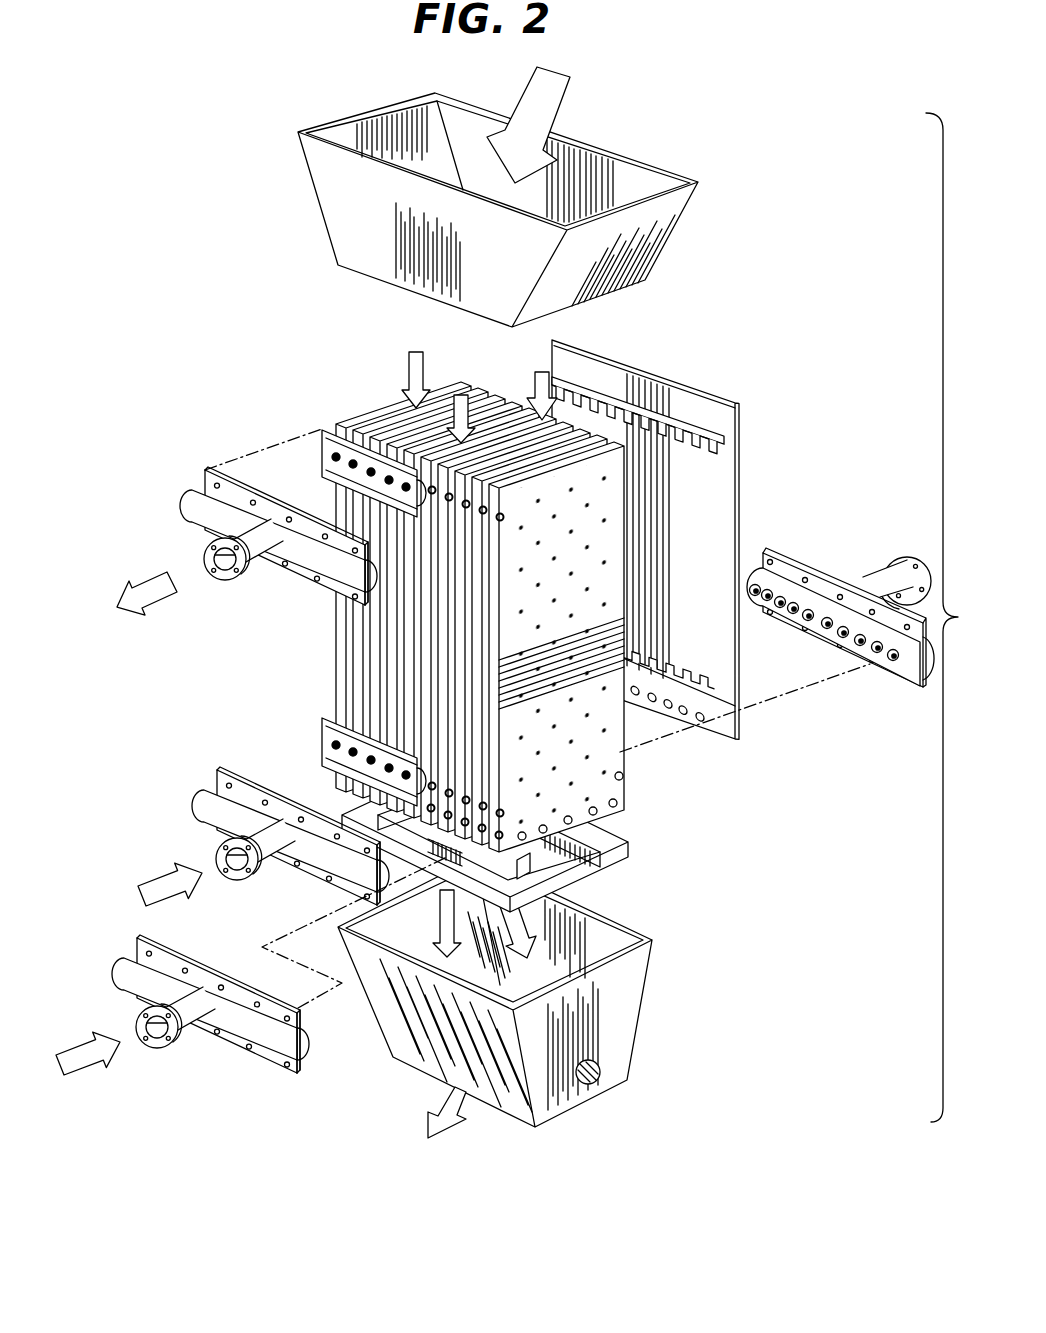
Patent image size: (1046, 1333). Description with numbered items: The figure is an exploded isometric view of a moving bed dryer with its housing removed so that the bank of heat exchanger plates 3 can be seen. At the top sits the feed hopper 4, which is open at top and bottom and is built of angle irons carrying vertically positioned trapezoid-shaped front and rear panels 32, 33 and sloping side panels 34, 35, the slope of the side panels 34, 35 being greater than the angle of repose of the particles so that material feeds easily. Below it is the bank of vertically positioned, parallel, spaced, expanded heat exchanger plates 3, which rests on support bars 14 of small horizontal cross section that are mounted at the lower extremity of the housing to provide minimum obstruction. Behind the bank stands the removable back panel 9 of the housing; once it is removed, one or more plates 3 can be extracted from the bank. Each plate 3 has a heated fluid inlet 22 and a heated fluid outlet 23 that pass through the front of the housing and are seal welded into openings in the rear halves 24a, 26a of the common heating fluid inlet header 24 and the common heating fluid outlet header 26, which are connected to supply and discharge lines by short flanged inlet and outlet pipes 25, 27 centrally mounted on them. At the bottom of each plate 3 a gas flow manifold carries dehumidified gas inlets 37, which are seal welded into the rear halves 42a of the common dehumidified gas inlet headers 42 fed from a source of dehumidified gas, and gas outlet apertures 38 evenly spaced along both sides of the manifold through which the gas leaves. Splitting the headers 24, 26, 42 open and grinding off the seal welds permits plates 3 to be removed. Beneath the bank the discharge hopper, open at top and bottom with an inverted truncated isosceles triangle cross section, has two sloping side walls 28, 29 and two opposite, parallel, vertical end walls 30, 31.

The feed hopper 4 is at (497, 206).
The front panel 32 is at (347, 242).
The rear panel 33 is at (640, 170).
The side panel 34 is at (608, 283).
The side panel 35 is at (350, 128).
The back panel 9 is at (668, 545).
The heat exchanger plate 3 is at (597, 743).
The heated fluid outlet 23 is at (503, 517).
The heated fluid inlet 22 is at (505, 818).
The dehumidified gas inlet 37 is at (505, 836).
The gas outlet aperture 38 is at (610, 805).
The common heating fluid outlet header 26 is at (247, 555).
The outlet pipe 27 is at (263, 563).
The rear half 26a is at (373, 575).
The common heating fluid inlet header 24 is at (263, 841).
The inlet pipe 25 is at (277, 862).
The rear half 24a is at (380, 873).
The common dehumidified gas inlet header 42 is at (130, 973).
The rear half 42a is at (303, 1042).
The support bar 14 is at (622, 862).
The end wall 30 is at (368, 932).
The side wall 28 is at (499, 1013).
The side wall 29 is at (607, 928).
The end wall 31 is at (628, 1017).